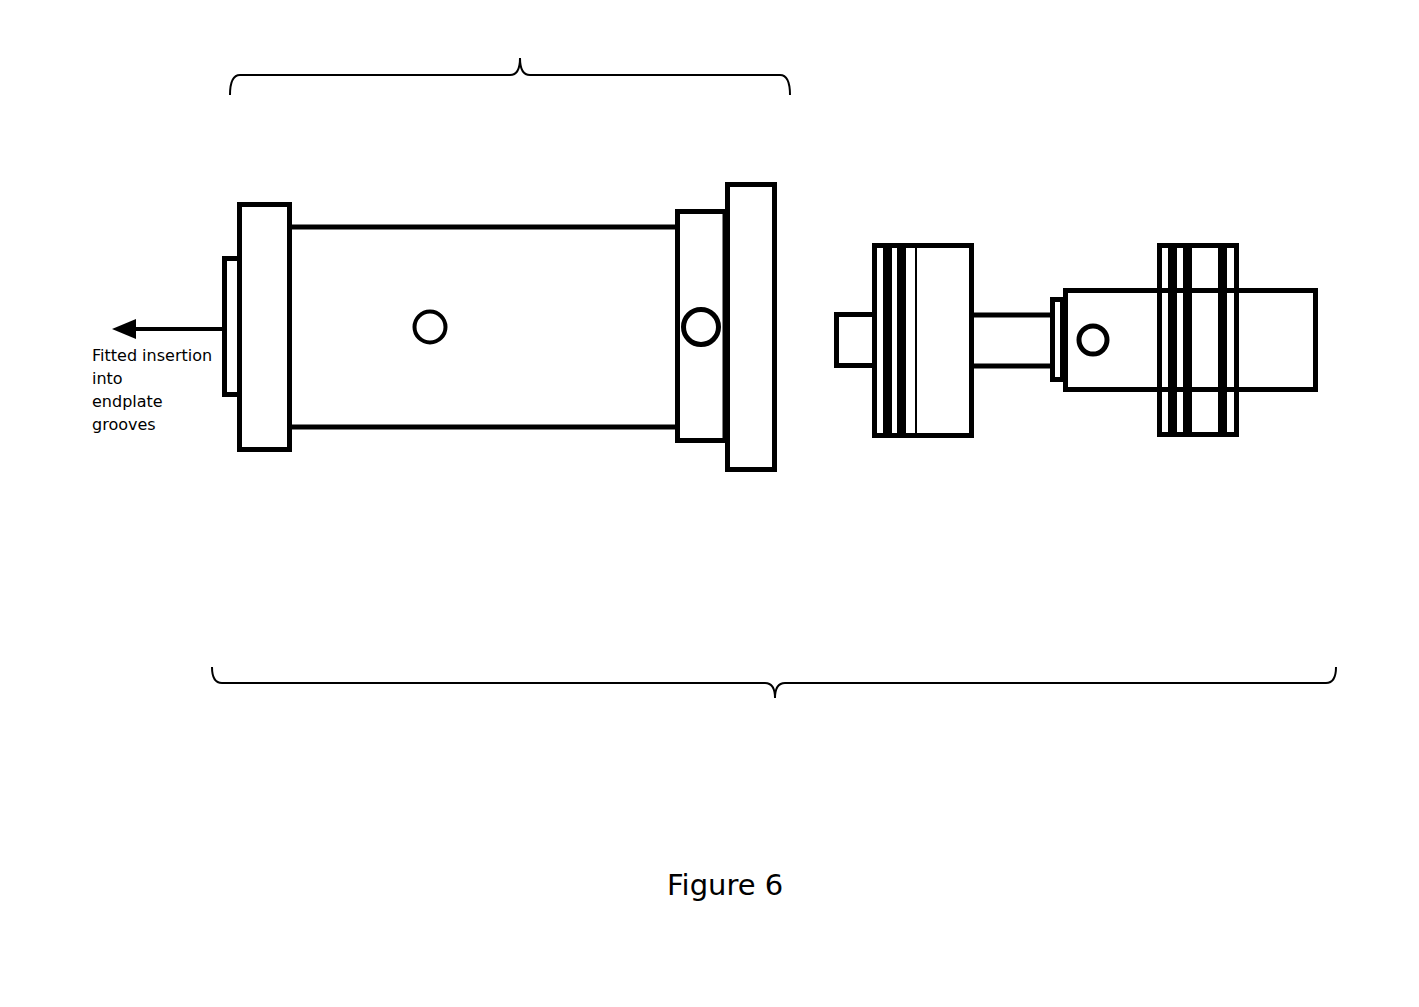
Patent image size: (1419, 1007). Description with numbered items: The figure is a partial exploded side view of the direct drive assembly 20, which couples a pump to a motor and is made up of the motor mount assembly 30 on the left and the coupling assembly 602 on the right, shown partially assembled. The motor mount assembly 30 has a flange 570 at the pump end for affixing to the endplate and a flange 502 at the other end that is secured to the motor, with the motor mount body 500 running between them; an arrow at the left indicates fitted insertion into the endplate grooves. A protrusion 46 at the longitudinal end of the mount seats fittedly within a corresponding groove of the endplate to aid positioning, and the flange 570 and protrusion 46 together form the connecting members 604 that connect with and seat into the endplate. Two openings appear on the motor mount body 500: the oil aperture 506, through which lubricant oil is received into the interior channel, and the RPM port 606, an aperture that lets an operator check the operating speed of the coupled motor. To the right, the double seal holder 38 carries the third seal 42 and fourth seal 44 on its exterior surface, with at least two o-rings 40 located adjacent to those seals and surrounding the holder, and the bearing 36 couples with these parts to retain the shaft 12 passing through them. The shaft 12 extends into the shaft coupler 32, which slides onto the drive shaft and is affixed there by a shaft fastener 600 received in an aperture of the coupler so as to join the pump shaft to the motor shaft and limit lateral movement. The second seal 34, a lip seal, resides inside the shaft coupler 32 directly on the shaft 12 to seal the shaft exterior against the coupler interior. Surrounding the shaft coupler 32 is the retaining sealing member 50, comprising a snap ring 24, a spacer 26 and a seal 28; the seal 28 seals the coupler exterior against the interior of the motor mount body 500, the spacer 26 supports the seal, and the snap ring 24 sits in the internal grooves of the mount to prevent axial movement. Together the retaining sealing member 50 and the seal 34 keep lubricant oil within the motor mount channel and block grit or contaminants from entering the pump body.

The motor mount assembly 30 is at (510, 63).
The flange 570 is at (268, 218).
The protrusion 46 is at (230, 268).
The connecting members 604 is at (229, 432).
The motor mount body 500 is at (580, 331).
The aperture 506 is at (430, 345).
The RPM port 606 is at (697, 335).
The flange 502 is at (748, 210).
The double seal holder 38 is at (893, 422).
The o-rings 40 is at (898, 245).
The third seal 42 is at (893, 247).
The fourth seal 44 is at (906, 247).
The ball bearing 36 is at (953, 422).
The drive shaft 12 is at (1015, 330).
The second seal 34 is at (1057, 383).
The coupling assembly 602 is at (1220, 100).
The shaft coupler 32 is at (1267, 377).
The shaft fastener 600 is at (1093, 323).
The retaining sealing member 50 is at (1239, 236).
The seal 28 is at (1188, 440).
The spacer 26 is at (1199, 410).
The snap ring 24 is at (1232, 440).
The direct drive assembly 20 is at (774, 698).